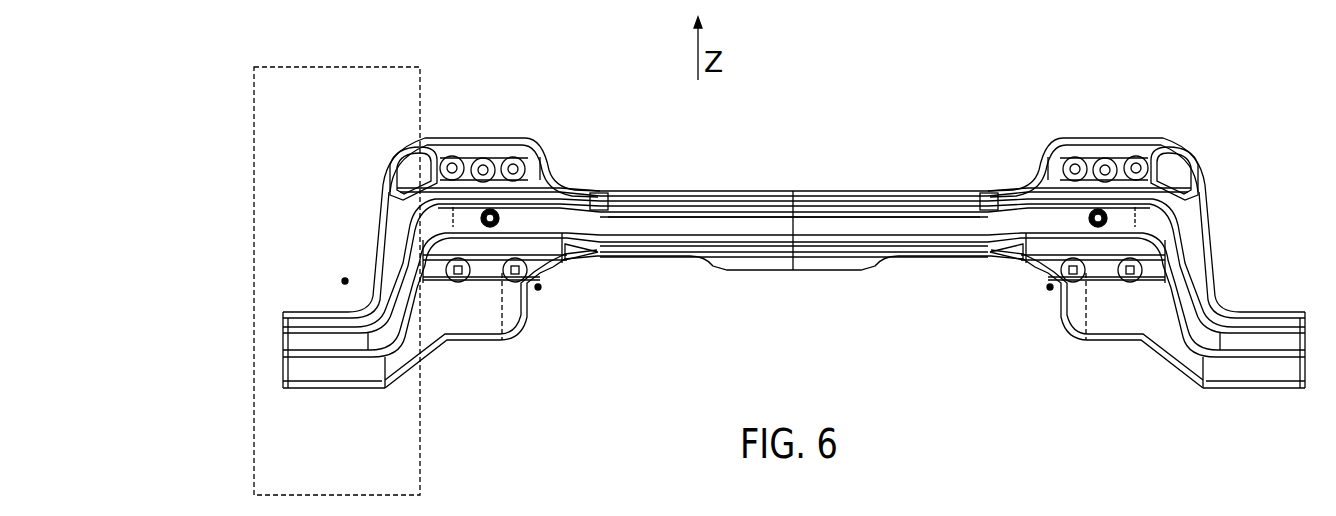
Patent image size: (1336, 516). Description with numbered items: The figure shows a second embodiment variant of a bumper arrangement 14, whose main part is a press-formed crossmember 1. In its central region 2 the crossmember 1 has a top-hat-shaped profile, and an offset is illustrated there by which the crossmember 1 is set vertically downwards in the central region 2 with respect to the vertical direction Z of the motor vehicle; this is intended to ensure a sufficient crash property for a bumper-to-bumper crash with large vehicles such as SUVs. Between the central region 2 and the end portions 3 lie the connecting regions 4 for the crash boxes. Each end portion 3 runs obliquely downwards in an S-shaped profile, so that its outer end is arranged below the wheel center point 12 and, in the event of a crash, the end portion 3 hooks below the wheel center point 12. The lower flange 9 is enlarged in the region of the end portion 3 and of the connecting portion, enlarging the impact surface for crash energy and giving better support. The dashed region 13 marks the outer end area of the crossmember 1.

The crossmember 1 is at (978, 273).
The central region 2 is at (1045, 105).
The end portion 3 is at (453, 105).
The connecting region 4 is at (528, 105).
The lower flange 9 is at (472, 320).
The wheel center point 12 is at (345, 280).
The end region 13 is at (254, 190).
The bumper arrangement 14 is at (625, 510).